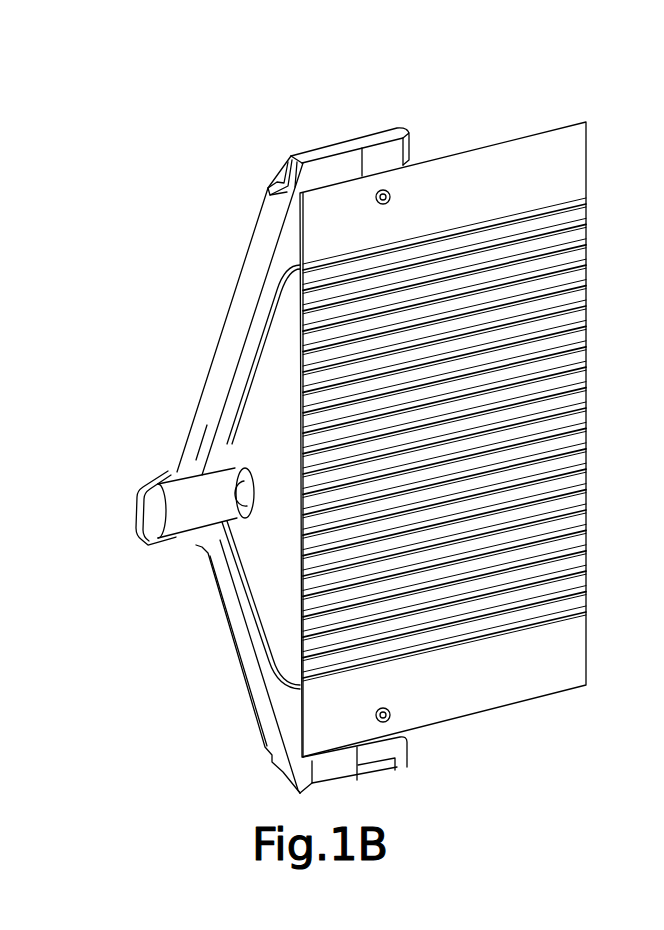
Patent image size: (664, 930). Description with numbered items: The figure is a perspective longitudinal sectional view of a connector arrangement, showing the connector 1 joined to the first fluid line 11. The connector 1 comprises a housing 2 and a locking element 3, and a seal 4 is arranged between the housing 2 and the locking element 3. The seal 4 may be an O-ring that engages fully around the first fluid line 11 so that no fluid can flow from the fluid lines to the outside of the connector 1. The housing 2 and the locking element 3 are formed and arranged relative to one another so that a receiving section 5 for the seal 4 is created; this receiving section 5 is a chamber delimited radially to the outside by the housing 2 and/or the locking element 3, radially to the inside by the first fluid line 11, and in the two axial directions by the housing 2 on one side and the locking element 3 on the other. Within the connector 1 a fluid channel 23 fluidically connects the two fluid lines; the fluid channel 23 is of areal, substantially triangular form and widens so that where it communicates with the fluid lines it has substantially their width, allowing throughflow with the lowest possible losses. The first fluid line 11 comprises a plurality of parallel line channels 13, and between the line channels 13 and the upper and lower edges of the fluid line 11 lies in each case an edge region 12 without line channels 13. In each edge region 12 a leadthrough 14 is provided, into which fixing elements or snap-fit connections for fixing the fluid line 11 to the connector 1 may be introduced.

The connector 1 is at (262, 96).
The housing 2 is at (229, 311).
The locking element 3 is at (402, 148).
The seal 4 is at (302, 161).
The receiving section 5 is at (346, 118).
The first fluid line 11 is at (604, 300).
The edge region 12 is at (505, 685).
The line channels 13 is at (572, 480).
The leadthrough 14 is at (391, 191).
The fluid channel 23 is at (250, 608).